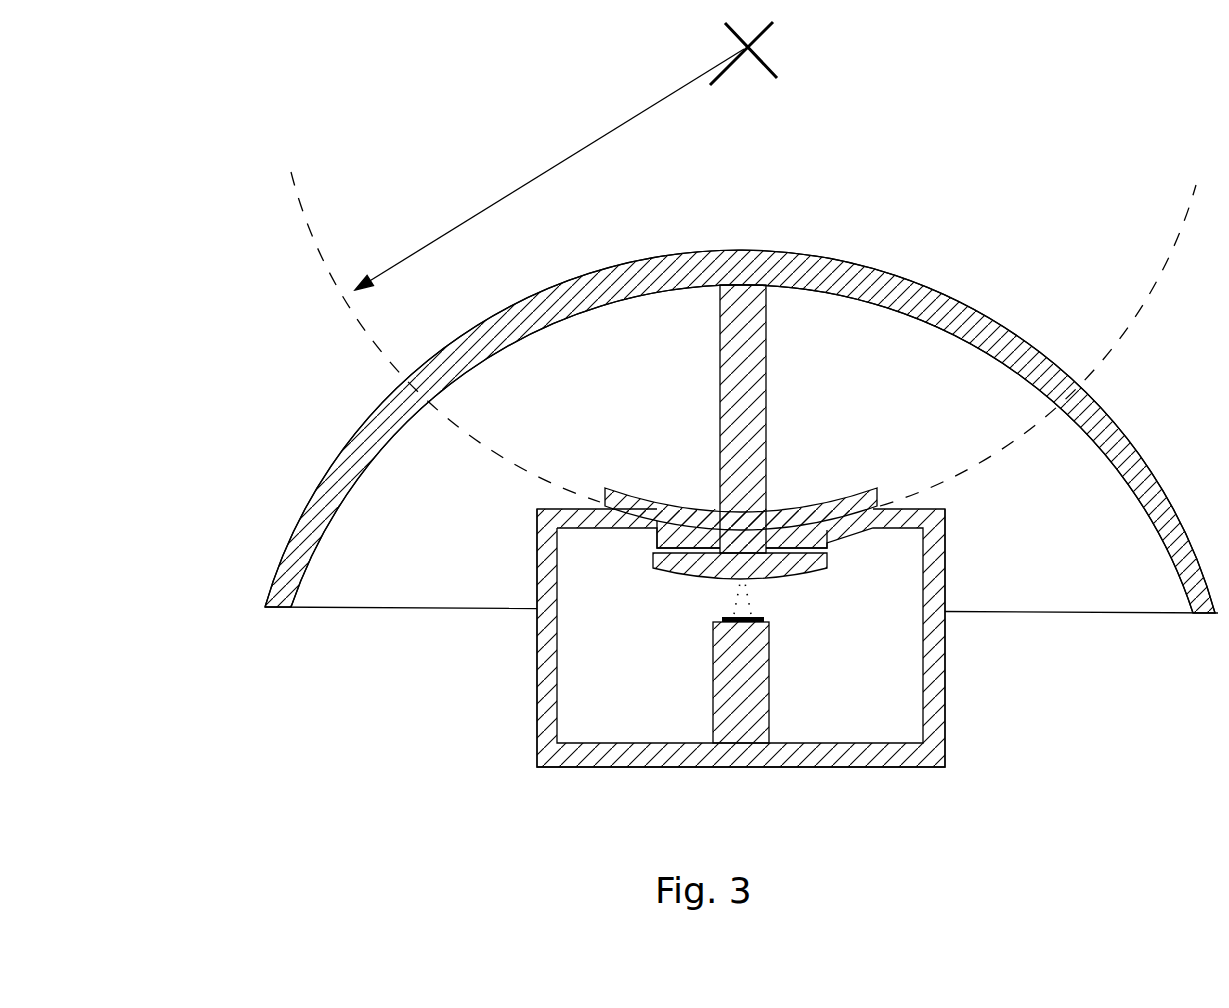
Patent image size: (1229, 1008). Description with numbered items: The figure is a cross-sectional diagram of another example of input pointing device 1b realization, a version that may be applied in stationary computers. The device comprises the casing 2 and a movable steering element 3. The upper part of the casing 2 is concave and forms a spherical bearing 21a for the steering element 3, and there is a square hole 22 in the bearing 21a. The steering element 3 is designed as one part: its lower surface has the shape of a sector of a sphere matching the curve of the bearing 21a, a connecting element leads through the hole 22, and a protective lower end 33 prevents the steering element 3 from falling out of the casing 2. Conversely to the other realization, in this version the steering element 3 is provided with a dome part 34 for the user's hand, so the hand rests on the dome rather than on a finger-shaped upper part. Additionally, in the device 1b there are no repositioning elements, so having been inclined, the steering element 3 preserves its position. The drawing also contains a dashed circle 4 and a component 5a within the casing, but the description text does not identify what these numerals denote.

The input pointing device 1b is at (508, 728).
The casing 2 is at (926, 756).
The steering element 3 is at (322, 440).
The reference sphere (dashed circle) 4 is at (321, 276).
The light source 5a is at (740, 683).
The spherical bearing 21a is at (837, 527).
The square hole 22 is at (672, 538).
The protective lower end 33 is at (843, 508).
The dome part 34 is at (977, 332).